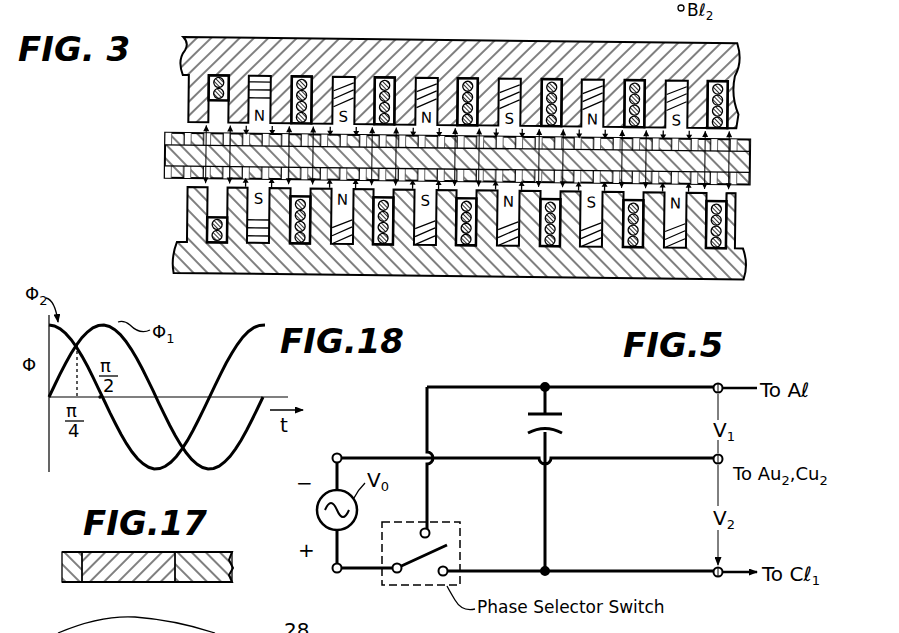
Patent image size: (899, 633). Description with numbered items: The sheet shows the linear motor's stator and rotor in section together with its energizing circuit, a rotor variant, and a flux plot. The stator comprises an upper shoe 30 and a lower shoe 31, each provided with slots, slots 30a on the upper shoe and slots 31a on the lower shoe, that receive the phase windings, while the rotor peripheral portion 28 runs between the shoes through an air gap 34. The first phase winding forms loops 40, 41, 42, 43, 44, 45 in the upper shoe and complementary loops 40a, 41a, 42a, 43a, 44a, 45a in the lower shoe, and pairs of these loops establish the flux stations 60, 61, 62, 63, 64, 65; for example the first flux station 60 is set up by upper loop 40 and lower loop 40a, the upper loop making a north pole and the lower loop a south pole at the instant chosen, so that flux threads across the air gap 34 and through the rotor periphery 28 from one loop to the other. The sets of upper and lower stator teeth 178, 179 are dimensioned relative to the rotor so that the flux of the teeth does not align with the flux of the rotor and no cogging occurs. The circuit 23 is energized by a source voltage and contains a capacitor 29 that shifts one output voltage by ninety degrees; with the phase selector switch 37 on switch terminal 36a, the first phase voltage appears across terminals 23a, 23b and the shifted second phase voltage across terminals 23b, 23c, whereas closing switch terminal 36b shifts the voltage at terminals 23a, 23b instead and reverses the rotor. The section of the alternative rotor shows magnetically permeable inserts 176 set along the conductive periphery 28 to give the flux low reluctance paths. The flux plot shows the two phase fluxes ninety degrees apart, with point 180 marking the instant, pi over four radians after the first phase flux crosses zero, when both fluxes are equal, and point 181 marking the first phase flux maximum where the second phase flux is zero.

In FIG. 3, the upper shoe 30 is at (742, 48).
In FIG. 3, the slots 30a is at (737, 96).
In FIG. 3, the lower shoe 31 is at (752, 260).
In FIG. 3, the slots 31a is at (742, 212).
In FIG. 3, the air gap 34 is at (181, 186).
In FIG. 3, the loop 40 is at (259, 76).
In FIG. 3, the loop 41 is at (346, 95).
In FIG. 3, the loop 42 is at (427, 78).
In FIG. 3, the loop 43 is at (509, 90).
In FIG. 3, the loop 44 is at (591, 90).
In FIG. 3, the loop 45 is at (675, 90).
In FIG. 3, the loop 40a is at (263, 232).
In FIG. 3, the loop 41a is at (343, 232).
In FIG. 3, the loop 42a is at (427, 233).
In FIG. 3, the loop 43a is at (510, 234).
In FIG. 3, the loop 44a is at (593, 235).
In FIG. 3, the loop 45a is at (677, 236).
In FIG. 3, the flux station 60 is at (248, 110).
In FIG. 3, the flux station 61 is at (369, 118).
In FIG. 3, the flux station 62 is at (454, 115).
In FIG. 3, the flux station 63 is at (525, 118).
In FIG. 3, the flux station 64 is at (612, 118).
In FIG. 3, the flux station 65 is at (694, 118).
In FIG. 3, the upper stator teeth 178 is at (288, 112).
In FIG. 3, the lower stator teeth 179 is at (740, 190).
In FIG. 18, the point 180 is at (78, 340).
In FIG. 18, the point 181 is at (97, 403).
In FIG. 5, the circuit 23 is at (594, 385).
In FIG. 5, the terminal 23a is at (721, 387).
In FIG. 5, the terminal 23b is at (722, 459).
In FIG. 5, the terminal 23c is at (722, 571).
In FIG. 5, the capacitor 29 is at (562, 426).
In FIG. 5, the switch terminal 36a is at (429, 530).
In FIG. 5, the switch terminal 36b is at (450, 568).
In FIG. 5, the phase selector switch 37 is at (423, 590).
In FIG. 17, the inserts 176 is at (111, 568).
In FIG. 17, the peripheral edge 28 is at (212, 590).